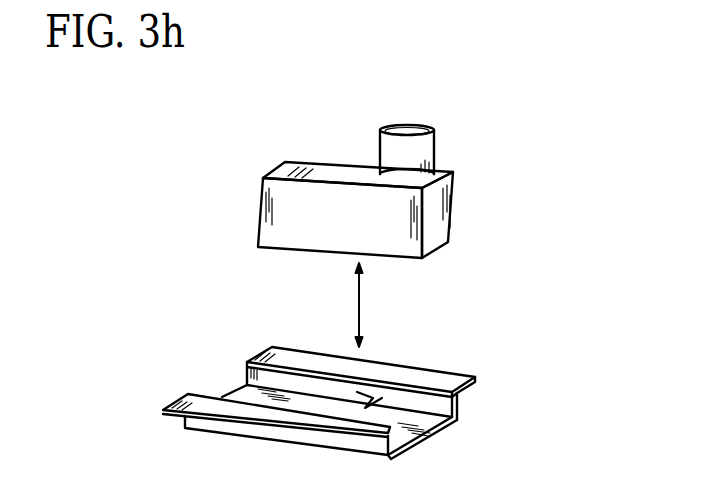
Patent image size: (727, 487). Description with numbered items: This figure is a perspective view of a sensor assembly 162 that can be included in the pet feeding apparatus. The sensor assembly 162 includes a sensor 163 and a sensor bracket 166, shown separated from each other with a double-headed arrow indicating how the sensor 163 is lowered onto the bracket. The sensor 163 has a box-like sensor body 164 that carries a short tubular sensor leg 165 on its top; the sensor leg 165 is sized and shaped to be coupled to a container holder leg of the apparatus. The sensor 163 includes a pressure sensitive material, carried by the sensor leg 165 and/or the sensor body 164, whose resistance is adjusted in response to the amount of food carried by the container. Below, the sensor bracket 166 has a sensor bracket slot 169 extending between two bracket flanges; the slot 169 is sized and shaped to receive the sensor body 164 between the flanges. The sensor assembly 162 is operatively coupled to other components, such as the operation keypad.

The sensor assembly 162 is at (140, 145).
The sensor 163 is at (533, 167).
The sensor body 164 is at (273, 233).
The sensor leg 165 is at (425, 143).
The sensor bracket 166 is at (138, 382).
The sensor bracket slot 169 is at (383, 396).